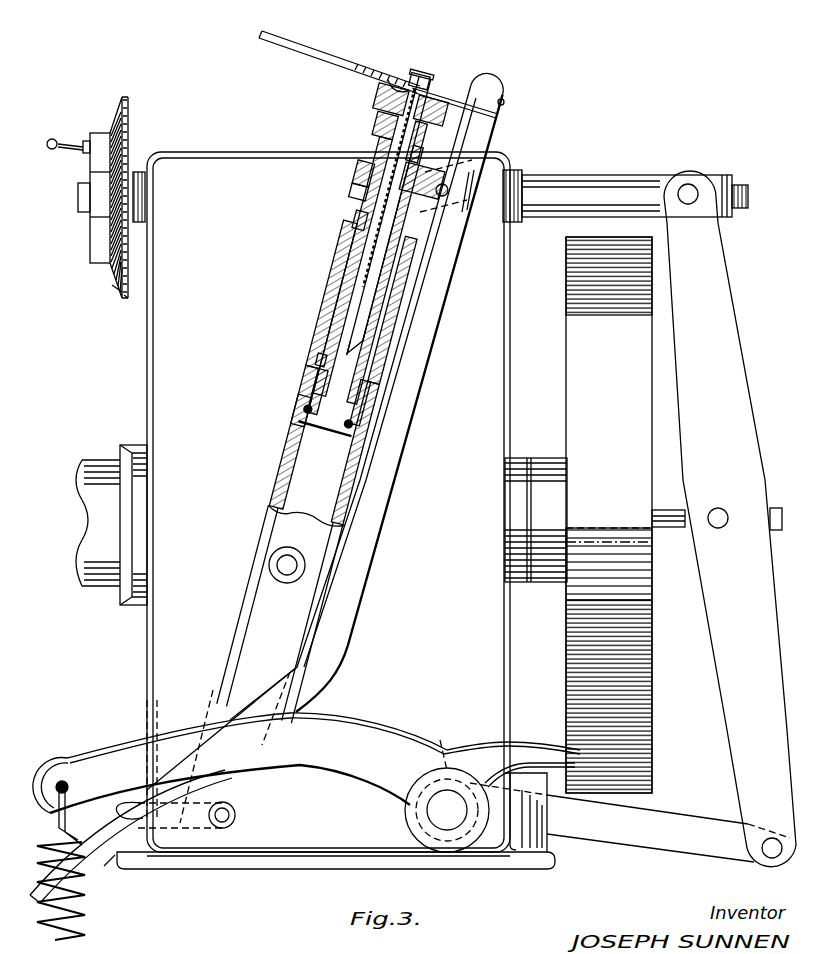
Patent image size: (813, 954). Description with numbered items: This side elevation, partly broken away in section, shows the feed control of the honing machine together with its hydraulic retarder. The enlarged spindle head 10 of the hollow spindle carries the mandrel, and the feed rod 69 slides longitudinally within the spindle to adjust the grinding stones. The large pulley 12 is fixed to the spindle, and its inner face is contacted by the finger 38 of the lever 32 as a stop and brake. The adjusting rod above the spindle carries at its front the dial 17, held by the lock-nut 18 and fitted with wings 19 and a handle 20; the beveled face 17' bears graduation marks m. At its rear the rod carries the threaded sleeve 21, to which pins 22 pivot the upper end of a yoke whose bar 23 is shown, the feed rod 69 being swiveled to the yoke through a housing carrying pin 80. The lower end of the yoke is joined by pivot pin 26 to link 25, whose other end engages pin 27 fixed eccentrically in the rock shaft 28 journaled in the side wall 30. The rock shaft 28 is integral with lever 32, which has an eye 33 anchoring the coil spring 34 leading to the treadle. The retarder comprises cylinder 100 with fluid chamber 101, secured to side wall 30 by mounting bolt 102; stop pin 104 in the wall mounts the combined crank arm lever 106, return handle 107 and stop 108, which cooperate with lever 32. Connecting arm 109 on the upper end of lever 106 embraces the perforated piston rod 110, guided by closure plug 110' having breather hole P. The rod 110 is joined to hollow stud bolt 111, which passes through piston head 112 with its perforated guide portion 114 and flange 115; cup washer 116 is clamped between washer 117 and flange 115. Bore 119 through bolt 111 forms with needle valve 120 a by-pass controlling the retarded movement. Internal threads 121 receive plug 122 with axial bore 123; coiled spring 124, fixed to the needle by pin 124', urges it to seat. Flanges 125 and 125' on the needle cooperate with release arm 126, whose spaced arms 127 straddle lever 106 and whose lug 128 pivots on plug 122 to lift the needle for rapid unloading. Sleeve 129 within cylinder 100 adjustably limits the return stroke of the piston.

The spindle head 10 is at (90, 558).
The pulley 12 is at (578, 515).
The dial 17 is at (134, 197).
The beveled face 17' is at (118, 311).
The lock-nut 18 is at (78, 196).
The wings 19 is at (90, 247).
The handle 20 is at (52, 139).
The threaded sleeve 21 is at (600, 180).
The pins 22 is at (688, 184).
The bar 23 is at (742, 406).
The link 25 is at (688, 840).
The pivot pin 26 is at (772, 860).
The pin 27 is at (440, 790).
The rock shaft 28 is at (450, 826).
The side wall 30 is at (420, 651).
The lever 32 is at (326, 762).
The eye 33 is at (63, 780).
The coil spring 34 is at (88, 934).
The finger 38 is at (534, 742).
The feed rod 69 is at (668, 527).
The pin 80 is at (720, 528).
The cylinder 100 is at (320, 314).
The fluid chamber 101 is at (283, 456).
The mounting bolt 102 is at (270, 564).
The stop pin 104 is at (236, 817).
The crank arm lever 106 is at (436, 323).
The return handle 107 is at (104, 866).
The stop 108 is at (140, 780).
The connecting arm 109 is at (434, 200).
The piston rod 110 is at (358, 216).
The closure plug 110' is at (336, 193).
The hollow stud bolt 111 is at (365, 386).
The piston head 112 is at (310, 385).
The perforated cylindrical guide portion 114 is at (322, 347).
The flange 115 is at (355, 413).
The cup washer 116 is at (300, 410).
The washer 117 is at (292, 432).
The bore 119 is at (325, 426).
The needle valve 120 is at (360, 352).
The internal threads 121 is at (392, 120).
The plug 122 is at (384, 100).
The axial bore 123 is at (440, 98).
The coiled spring 124 is at (441, 171).
The pin 124' is at (336, 218).
The annular flange 125 is at (433, 66).
The annular flange 125' is at (408, 62).
The release arm 126 is at (338, 46).
The spaced arms 127 is at (504, 103).
The depending lug 128 is at (396, 86).
The cylindrical sleeve 129 is at (340, 268).
The graduation marks m is at (114, 287).
The breather hole P is at (368, 182).